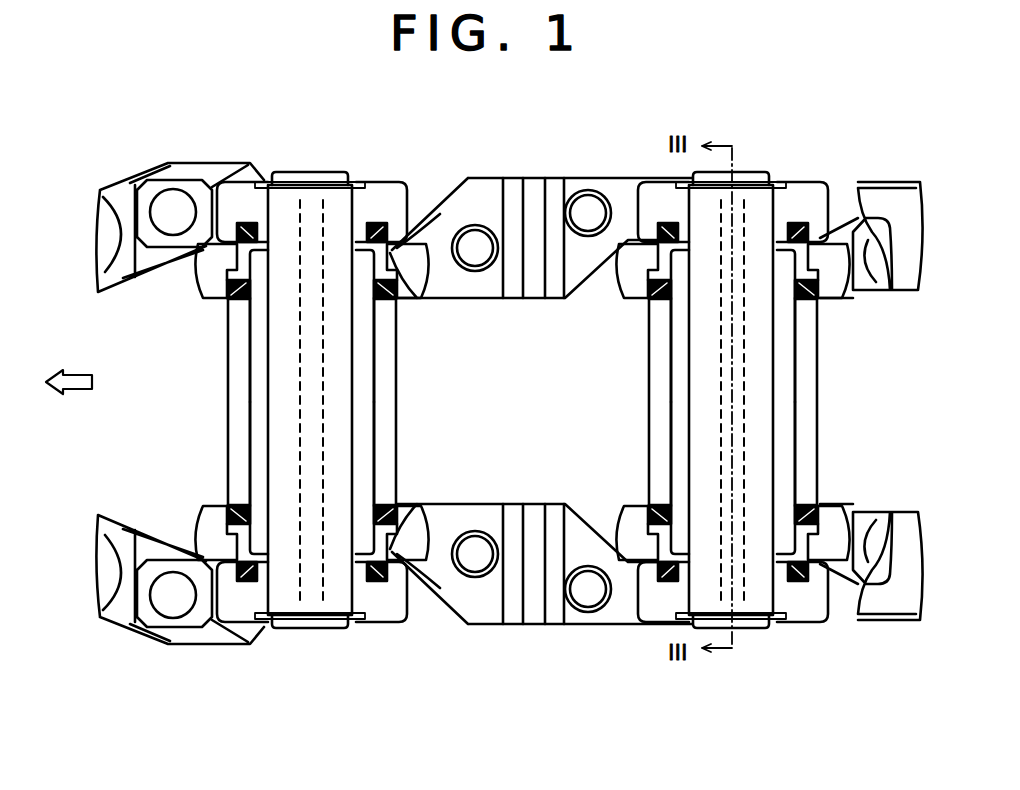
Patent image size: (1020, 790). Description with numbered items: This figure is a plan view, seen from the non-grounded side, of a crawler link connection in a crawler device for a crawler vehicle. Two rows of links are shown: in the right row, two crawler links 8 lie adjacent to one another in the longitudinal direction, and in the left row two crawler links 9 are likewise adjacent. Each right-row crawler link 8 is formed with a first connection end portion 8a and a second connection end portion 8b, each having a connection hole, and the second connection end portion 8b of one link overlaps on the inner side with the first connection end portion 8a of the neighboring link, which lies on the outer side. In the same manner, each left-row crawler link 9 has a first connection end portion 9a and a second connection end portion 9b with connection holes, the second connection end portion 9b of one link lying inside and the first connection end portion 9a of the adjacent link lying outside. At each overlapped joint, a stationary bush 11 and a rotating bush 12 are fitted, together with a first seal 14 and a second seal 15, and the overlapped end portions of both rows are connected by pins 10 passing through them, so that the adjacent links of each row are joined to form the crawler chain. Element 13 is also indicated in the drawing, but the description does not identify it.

The crawler link 8 is at (556, 184).
The first connection end portion 8a is at (195, 170).
The second connection end portion 8b is at (211, 280).
The crawler link 9 is at (549, 624).
The first connection end portion 9a is at (178, 636).
The second connection end portion 9b is at (214, 504).
The pin 10 is at (276, 620).
The stationary bush 11 is at (378, 428).
The rotating bush 12 is at (366, 391).
The seal 13 is at (398, 289).
The first seal 14 is at (380, 226).
The second seal 15 is at (402, 302).